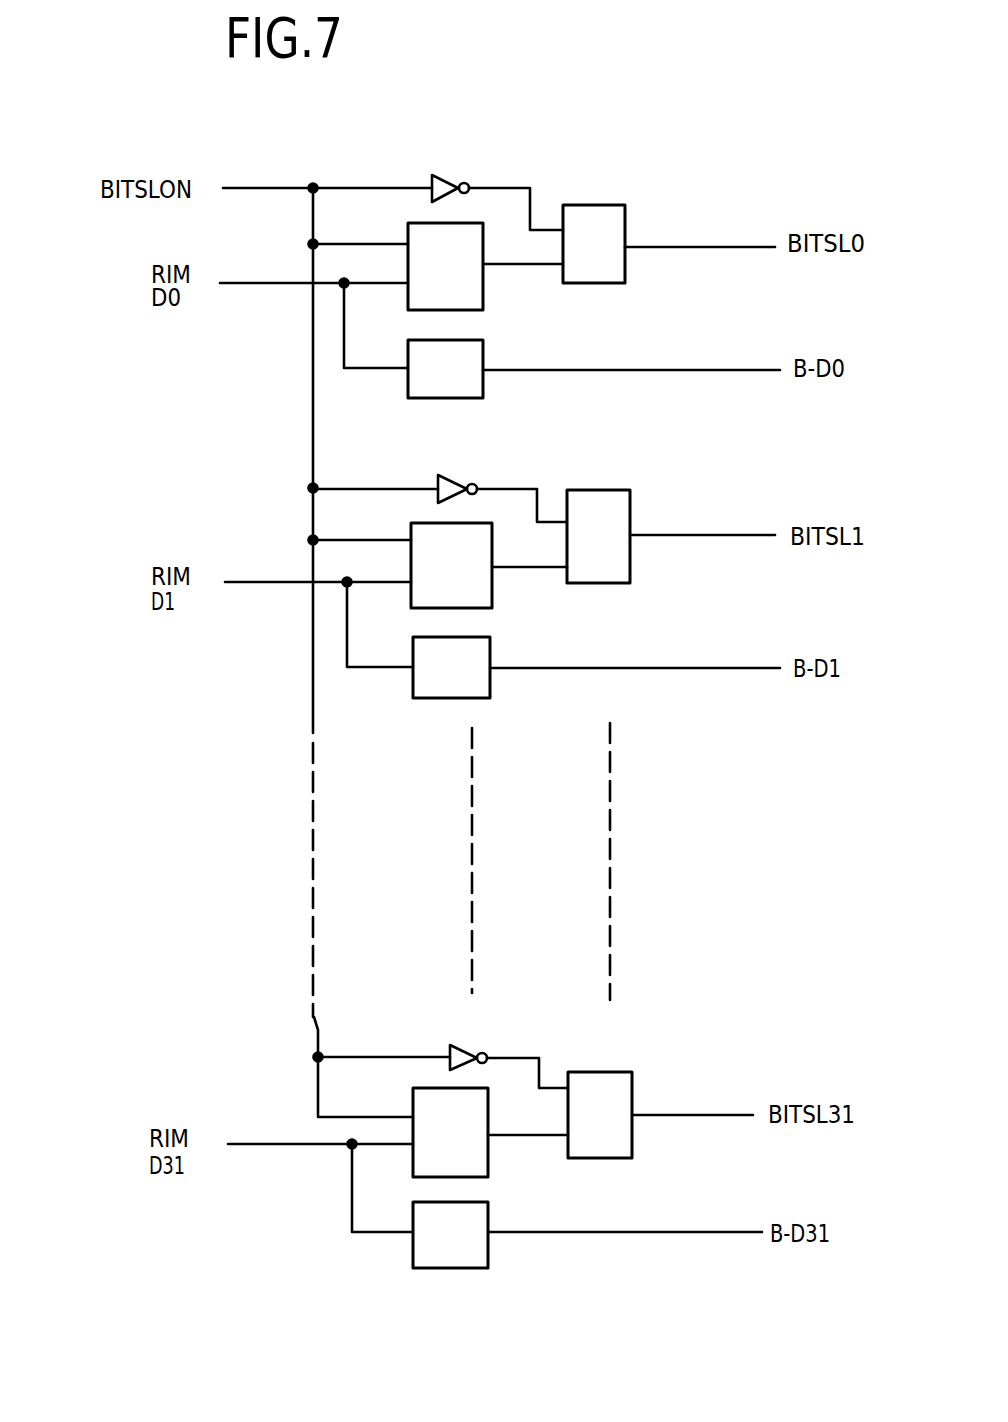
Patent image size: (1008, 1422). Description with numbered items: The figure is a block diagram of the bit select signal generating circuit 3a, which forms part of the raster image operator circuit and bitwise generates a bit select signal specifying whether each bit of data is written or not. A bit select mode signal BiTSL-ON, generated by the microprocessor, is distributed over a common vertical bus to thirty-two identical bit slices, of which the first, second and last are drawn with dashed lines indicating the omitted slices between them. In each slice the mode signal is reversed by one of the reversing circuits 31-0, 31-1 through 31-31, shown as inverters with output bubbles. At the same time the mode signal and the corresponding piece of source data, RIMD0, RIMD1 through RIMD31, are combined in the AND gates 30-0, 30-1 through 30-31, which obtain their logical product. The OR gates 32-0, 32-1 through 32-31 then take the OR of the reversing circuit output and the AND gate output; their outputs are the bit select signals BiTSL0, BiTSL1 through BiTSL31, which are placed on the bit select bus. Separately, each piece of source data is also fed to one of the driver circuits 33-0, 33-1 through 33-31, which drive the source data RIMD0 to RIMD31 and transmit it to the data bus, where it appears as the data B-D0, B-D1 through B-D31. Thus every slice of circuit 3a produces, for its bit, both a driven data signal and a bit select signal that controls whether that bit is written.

The AND gate 30-0 is at (415, 223).
The reversing circuit 31-0 is at (440, 173).
The OR gate 32-0 is at (625, 280).
The driver circuit 33-0 is at (483, 345).
The AND gate 30-1 is at (418, 523).
The reversing circuit 31-1 is at (440, 475).
The OR gate 32-1 is at (625, 490).
The driver circuit 33-1 is at (433, 698).
The AND gate 30-31 is at (488, 1155).
The reversing circuit 31-31 is at (458, 1043).
The OR gate 32-31 is at (628, 1072).
The driver circuit 33-31 is at (488, 1257).
The bit select signal generating circuit 3a is at (375, 1285).